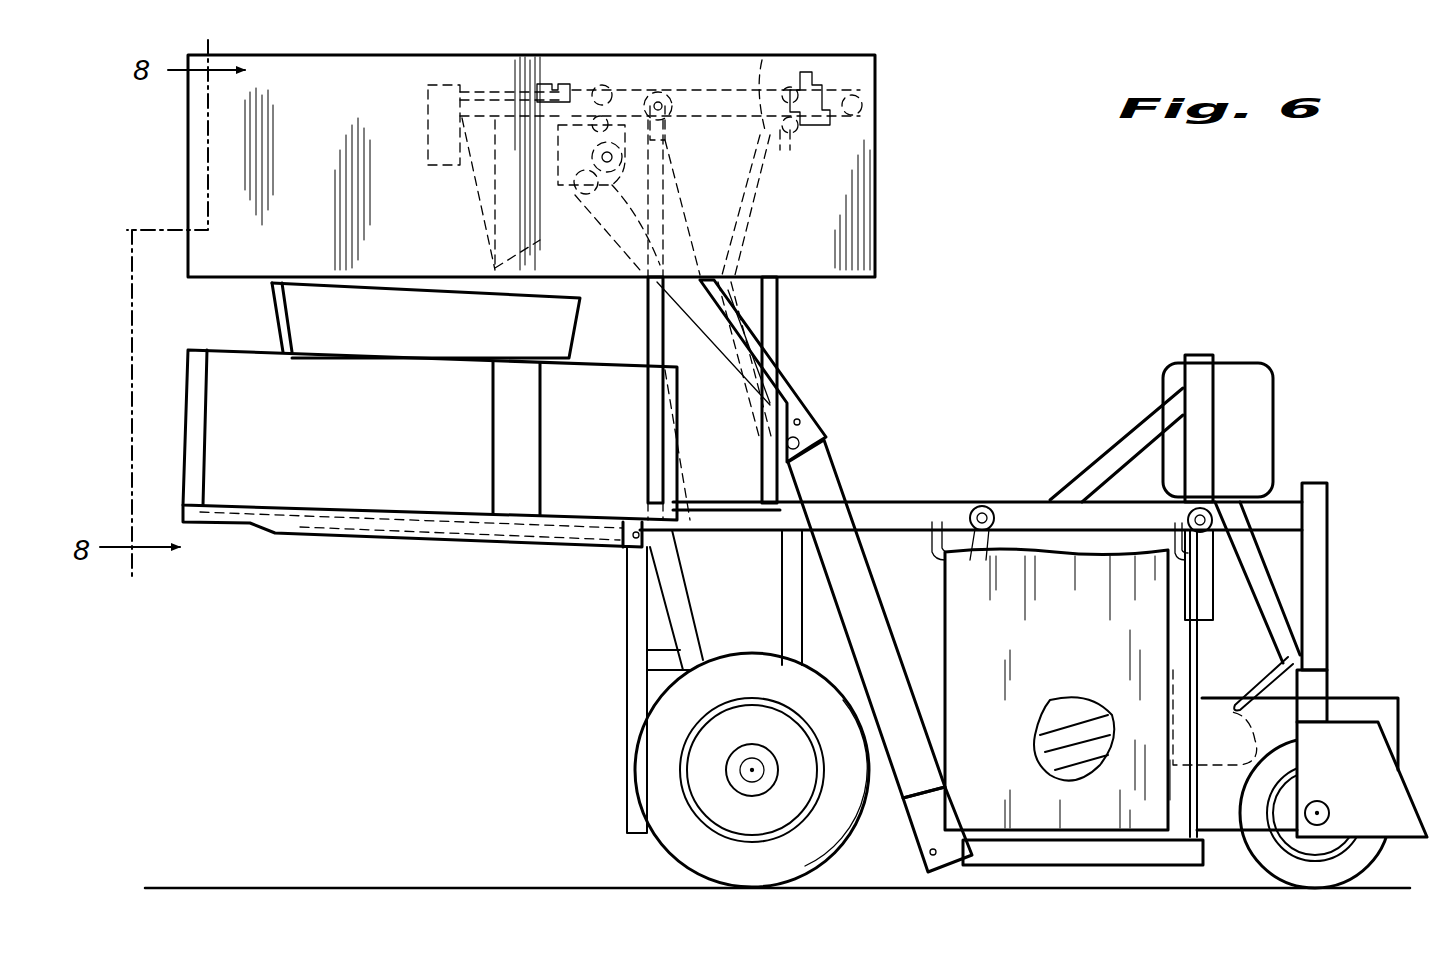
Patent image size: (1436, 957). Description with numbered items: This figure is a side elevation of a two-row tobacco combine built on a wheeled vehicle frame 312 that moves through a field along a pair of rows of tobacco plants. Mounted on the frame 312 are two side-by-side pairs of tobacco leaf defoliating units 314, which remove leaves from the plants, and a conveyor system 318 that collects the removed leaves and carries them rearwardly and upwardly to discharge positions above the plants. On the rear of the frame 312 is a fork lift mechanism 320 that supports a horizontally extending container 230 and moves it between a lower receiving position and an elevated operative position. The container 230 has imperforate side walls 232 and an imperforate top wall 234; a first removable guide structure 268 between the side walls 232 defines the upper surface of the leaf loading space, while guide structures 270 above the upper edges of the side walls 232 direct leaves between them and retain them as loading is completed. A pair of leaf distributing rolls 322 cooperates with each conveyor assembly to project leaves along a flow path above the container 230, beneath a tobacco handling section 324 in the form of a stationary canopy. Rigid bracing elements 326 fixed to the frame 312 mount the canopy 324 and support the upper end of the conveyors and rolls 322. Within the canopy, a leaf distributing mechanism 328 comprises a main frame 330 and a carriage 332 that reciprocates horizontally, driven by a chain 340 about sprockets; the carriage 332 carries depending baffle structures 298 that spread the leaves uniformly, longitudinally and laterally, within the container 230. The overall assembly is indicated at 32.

The tiller/attachment assembly 32 is at (878, 85).
The container 230 is at (183, 487).
The side walls 232 is at (258, 365).
The top wall 234 is at (192, 440).
The first removable guide structure 268 is at (272, 300).
The guide structures 270 is at (448, 338).
The baffle structure 298 is at (490, 208).
The wheeled vehicle frame 312 is at (925, 500).
The tobacco leaf defoliating units 314 is at (1135, 668).
The conveyor system 318 is at (832, 438).
The fork lift mechanism 320 is at (615, 552).
The leaf distributing rolls 322 is at (640, 158).
The tobacco handling section 324 is at (186, 152).
The rigid bracing elements 326 is at (723, 287).
The leaf distributing mechanism 328 is at (426, 98).
The main frame 330 is at (770, 42).
The carriage 332 is at (570, 64).
The chain 340 is at (800, 66).